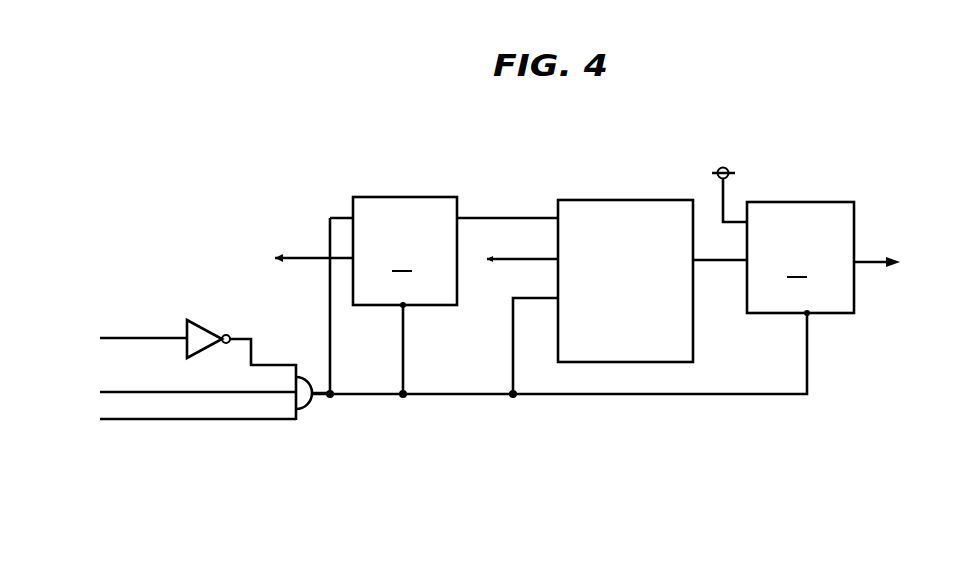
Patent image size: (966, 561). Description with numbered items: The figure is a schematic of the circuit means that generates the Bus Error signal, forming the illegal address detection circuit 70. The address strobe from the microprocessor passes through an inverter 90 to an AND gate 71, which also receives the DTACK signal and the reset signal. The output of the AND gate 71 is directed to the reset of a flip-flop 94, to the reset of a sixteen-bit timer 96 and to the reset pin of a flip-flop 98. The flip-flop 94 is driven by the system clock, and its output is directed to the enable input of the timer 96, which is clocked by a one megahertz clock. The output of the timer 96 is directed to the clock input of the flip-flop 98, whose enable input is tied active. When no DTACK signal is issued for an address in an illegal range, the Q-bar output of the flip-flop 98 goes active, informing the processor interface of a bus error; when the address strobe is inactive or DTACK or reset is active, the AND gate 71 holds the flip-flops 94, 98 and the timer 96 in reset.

The illegal address detection circuit 70 is at (290, 196).
The AND gate 71 is at (313, 405).
The inverter 90 is at (187, 318).
The flip-flop 94 is at (430, 197).
The timer 96 is at (558, 206).
The flip-flop 98 is at (836, 202).